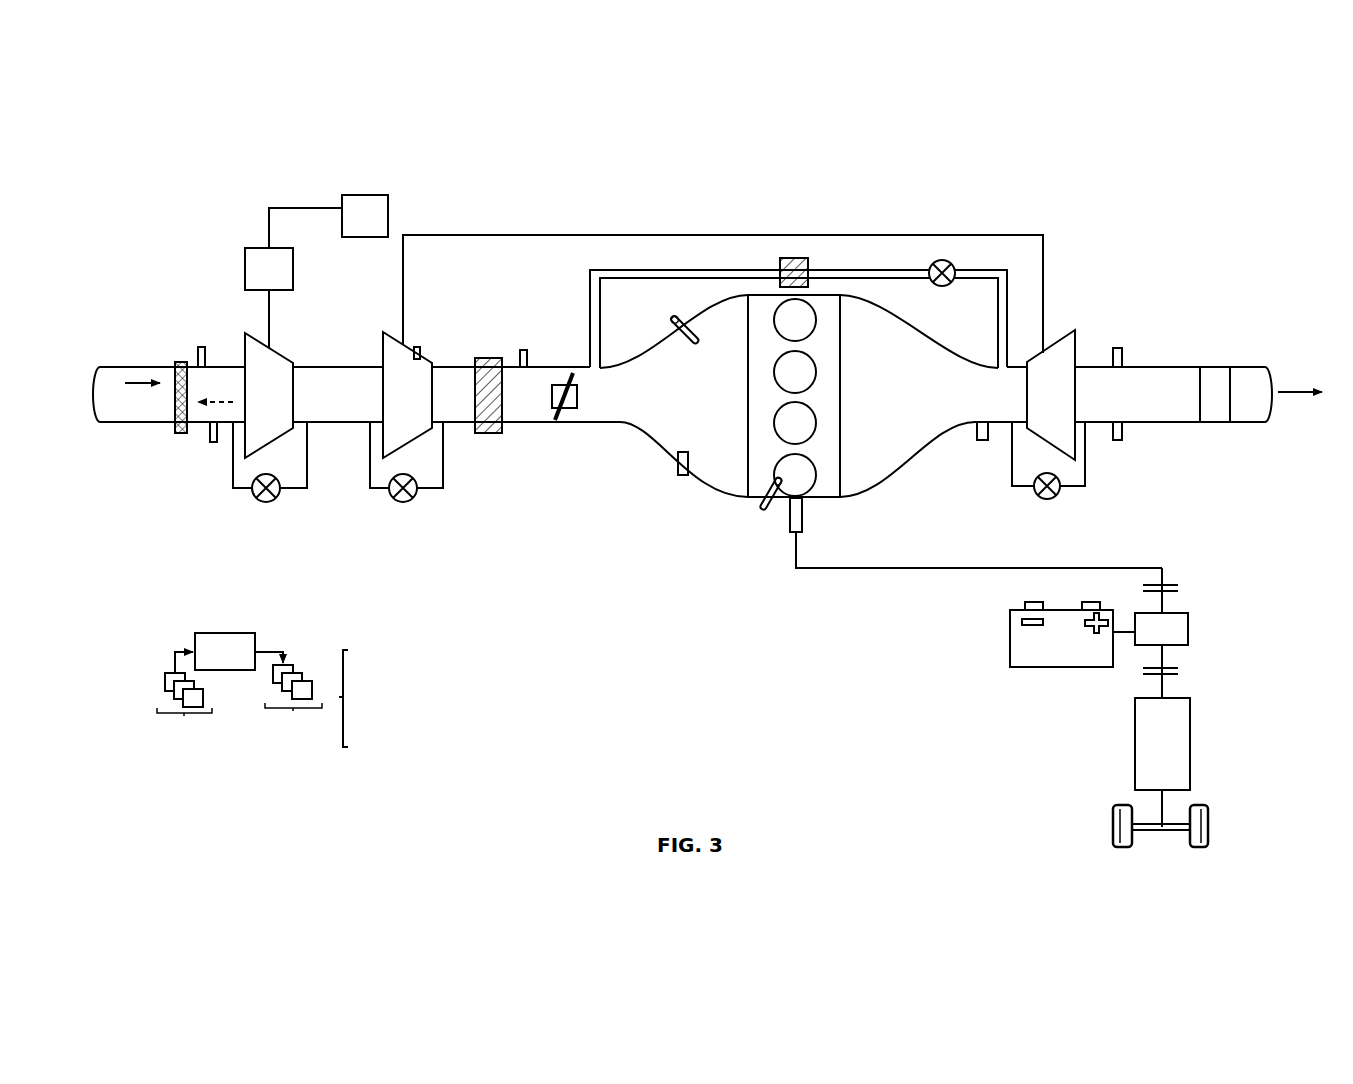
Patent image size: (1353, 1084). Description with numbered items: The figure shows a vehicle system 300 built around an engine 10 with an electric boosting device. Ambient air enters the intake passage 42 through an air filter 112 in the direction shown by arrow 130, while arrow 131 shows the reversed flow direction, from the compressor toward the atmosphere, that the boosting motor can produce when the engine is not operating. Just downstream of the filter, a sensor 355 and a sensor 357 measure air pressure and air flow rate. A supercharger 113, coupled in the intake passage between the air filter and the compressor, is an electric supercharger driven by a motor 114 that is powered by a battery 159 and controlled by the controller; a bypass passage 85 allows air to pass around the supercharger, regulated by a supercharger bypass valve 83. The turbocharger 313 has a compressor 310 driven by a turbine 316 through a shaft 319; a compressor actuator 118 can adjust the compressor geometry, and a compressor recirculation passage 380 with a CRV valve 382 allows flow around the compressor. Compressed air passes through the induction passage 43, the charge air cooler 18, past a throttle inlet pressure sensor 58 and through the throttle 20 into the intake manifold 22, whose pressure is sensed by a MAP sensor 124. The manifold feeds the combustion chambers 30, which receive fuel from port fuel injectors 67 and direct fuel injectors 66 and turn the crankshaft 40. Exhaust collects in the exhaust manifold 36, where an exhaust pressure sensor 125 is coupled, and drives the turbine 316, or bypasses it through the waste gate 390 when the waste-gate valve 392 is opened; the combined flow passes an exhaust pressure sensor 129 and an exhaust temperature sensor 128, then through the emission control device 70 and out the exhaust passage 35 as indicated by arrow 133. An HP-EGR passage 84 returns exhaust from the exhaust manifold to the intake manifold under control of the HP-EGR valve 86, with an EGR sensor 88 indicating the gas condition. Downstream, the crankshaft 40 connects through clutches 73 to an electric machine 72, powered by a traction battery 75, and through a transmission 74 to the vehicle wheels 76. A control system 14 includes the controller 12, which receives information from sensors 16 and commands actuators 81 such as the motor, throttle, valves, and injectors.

The vehicle system 300 is at (157, 145).
The engine 10 is at (582, 510).
The intake passage 42 is at (100, 426).
The arrow 130 is at (138, 387).
The arrow 131 is at (233, 398).
The air filter 112 is at (176, 362).
The sensor 355 is at (199, 348).
The sensor 357 is at (212, 442).
The supercharger 113 is at (269, 395).
The motor 114 is at (293, 278).
The battery 159 is at (365, 216).
The bypass passage 85 is at (307, 478).
The supercharger bypass valve 83 is at (268, 500).
The compressor 310 is at (407, 395).
The compressor actuator 118 is at (420, 347).
The shaft 319 is at (996, 238).
The compressor recirculation passage 380 is at (443, 478).
The CRV valve 382 is at (405, 500).
The induction passage 43 is at (450, 367).
The charge air cooler 18 is at (487, 358).
The throttle inlet pressure sensor 58 is at (524, 350).
The throttle 20 is at (577, 402).
The intake manifold 22 is at (674, 396).
The HP-EGR passage 84 is at (623, 280).
The port fuel injector 67 is at (676, 314).
The combustion chambers 30 is at (814, 309).
The exhaust manifold 36 is at (933, 396).
The EGR sensor 88 is at (800, 259).
The HP-EGR valve 86 is at (942, 287).
The turbine 316 is at (1051, 395).
The turbocharger 313 is at (1083, 333).
The exhaust pressure sensor 129 is at (1118, 348).
The exhaust temperature sensor 128 is at (1118, 441).
The exhaust pressure sensor 125 is at (979, 441).
The waste gate 390 is at (1012, 470).
The waste-gate valve 392 is at (1047, 499).
The exhaust passage 35 is at (1245, 367).
The emission control device 70 is at (1220, 423).
The arrow 133 is at (1293, 393).
The MAP sensor 124 is at (683, 476).
The direct fuel injector 66 is at (762, 509).
The crankshaft 40 is at (803, 525).
The clutches 73 is at (1180, 587).
The electric machine 72 is at (1188, 630).
The traction battery 75 is at (1068, 610).
The transmission 74 is at (1162, 744).
The vehicle wheels 76 is at (1113, 826).
The control system 14 is at (382, 698).
The controller 12 is at (225, 651).
The sensors 16 is at (183, 705).
The actuators 81 is at (295, 705).